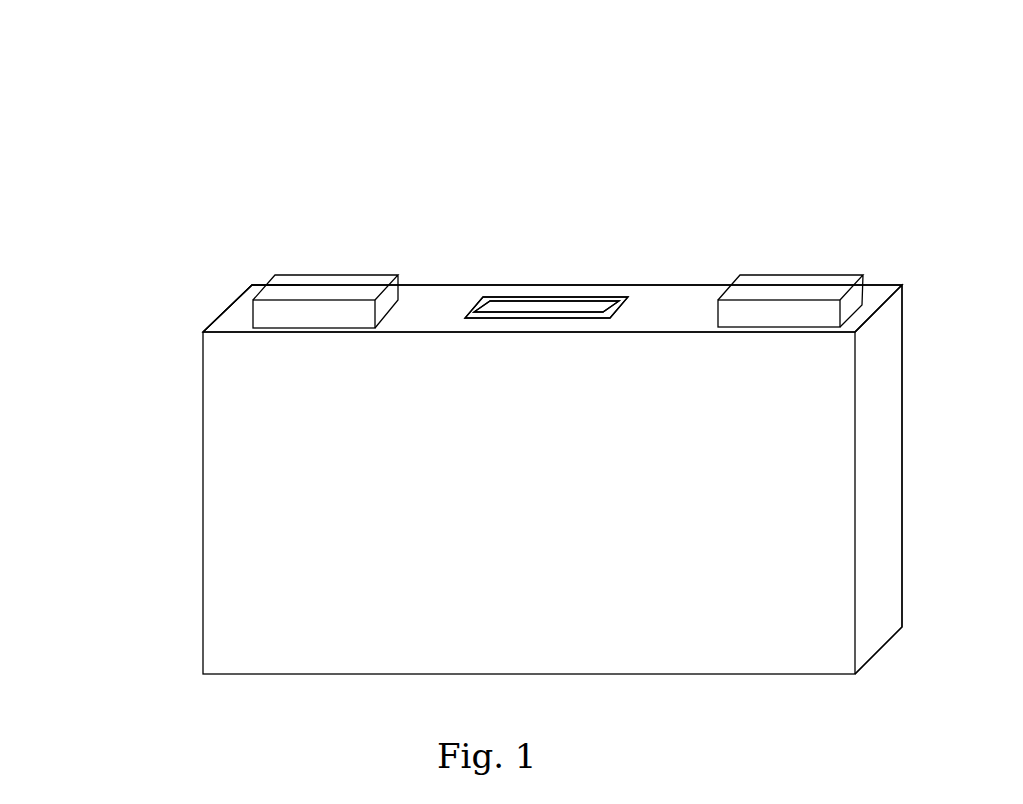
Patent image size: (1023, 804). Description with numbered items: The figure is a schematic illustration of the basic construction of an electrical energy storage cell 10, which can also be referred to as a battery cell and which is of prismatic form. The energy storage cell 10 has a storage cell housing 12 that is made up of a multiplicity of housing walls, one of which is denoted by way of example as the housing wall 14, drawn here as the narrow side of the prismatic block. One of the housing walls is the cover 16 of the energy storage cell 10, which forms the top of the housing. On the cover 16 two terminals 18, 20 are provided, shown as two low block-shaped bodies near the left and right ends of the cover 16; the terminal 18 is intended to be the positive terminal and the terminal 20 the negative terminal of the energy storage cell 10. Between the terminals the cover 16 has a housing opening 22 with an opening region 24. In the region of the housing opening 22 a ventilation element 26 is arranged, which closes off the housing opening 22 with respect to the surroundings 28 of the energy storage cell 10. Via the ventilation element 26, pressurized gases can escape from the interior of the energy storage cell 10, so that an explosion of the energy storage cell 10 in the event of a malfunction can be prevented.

The energy storage cell 10 is at (670, 695).
The storage cell housing 12 is at (172, 263).
The housing wall 14 is at (870, 452).
The cover 16 is at (667, 306).
The terminal 18 is at (333, 283).
The terminal 20 is at (790, 287).
The housing opening 22 is at (578, 263).
The opening region 24 is at (550, 308).
The ventilation element 26 is at (590, 307).
The surroundings 28 is at (479, 33).